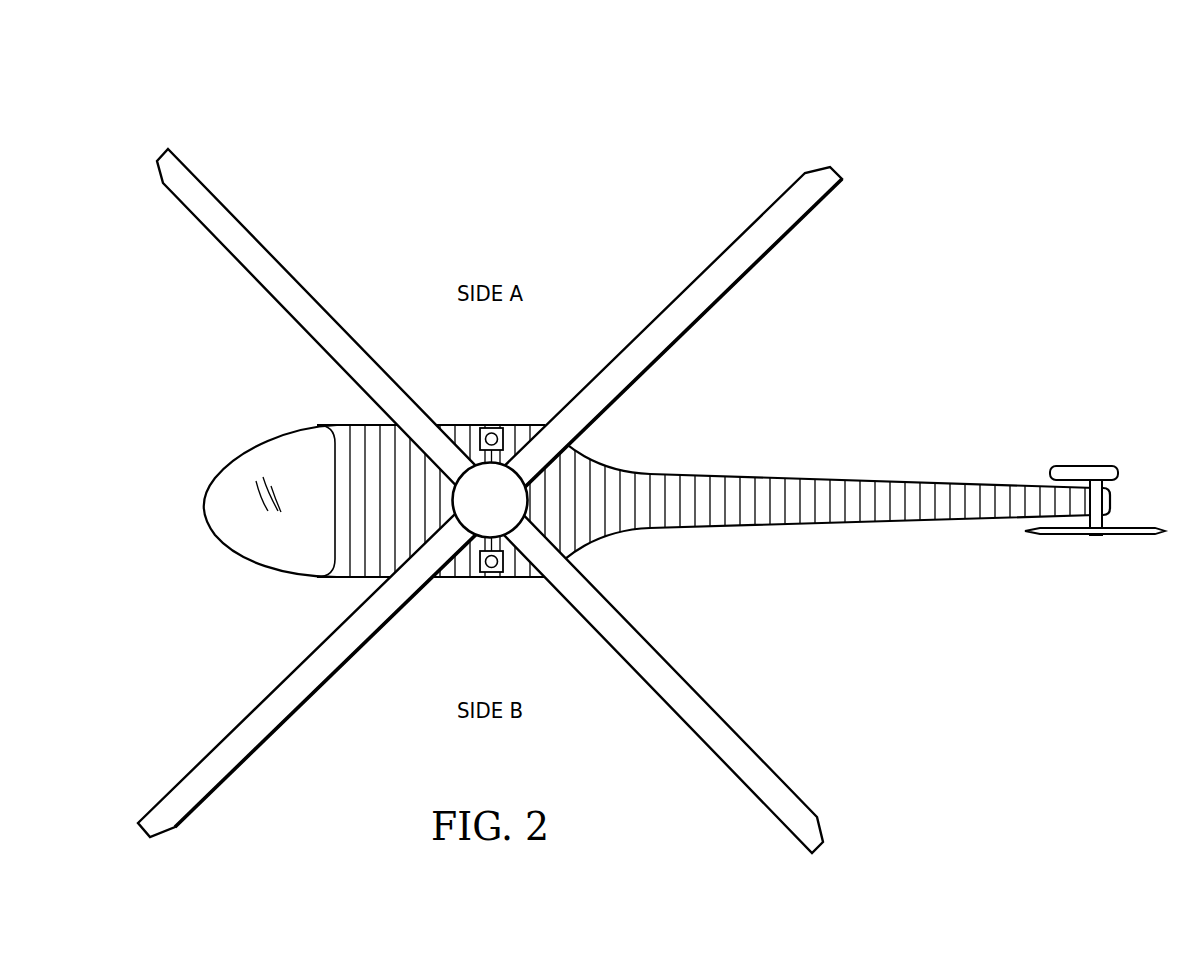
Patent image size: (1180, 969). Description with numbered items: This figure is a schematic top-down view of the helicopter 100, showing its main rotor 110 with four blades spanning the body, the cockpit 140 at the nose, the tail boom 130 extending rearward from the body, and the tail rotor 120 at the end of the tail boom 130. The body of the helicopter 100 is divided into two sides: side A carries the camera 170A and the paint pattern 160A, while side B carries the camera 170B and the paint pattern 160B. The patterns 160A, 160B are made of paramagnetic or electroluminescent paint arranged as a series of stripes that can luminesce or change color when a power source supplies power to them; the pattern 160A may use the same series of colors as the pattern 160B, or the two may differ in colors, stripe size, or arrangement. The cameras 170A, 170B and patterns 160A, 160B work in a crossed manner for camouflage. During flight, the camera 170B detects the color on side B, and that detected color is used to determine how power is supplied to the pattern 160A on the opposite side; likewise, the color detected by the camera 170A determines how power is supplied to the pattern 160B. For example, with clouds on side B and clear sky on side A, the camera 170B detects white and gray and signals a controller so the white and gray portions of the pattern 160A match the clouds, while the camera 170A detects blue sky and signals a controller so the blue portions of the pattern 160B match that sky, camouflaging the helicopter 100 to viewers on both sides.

The helicopter 100 is at (222, 94).
The rotor 110 is at (741, 738).
The tail rotor 120 is at (1130, 537).
The tail boom 130 is at (932, 481).
The cockpit 140 is at (270, 430).
The pattern 160A is at (456, 389).
The pattern 160B is at (457, 612).
The camera 170A is at (492, 427).
The camera 170B is at (492, 572).